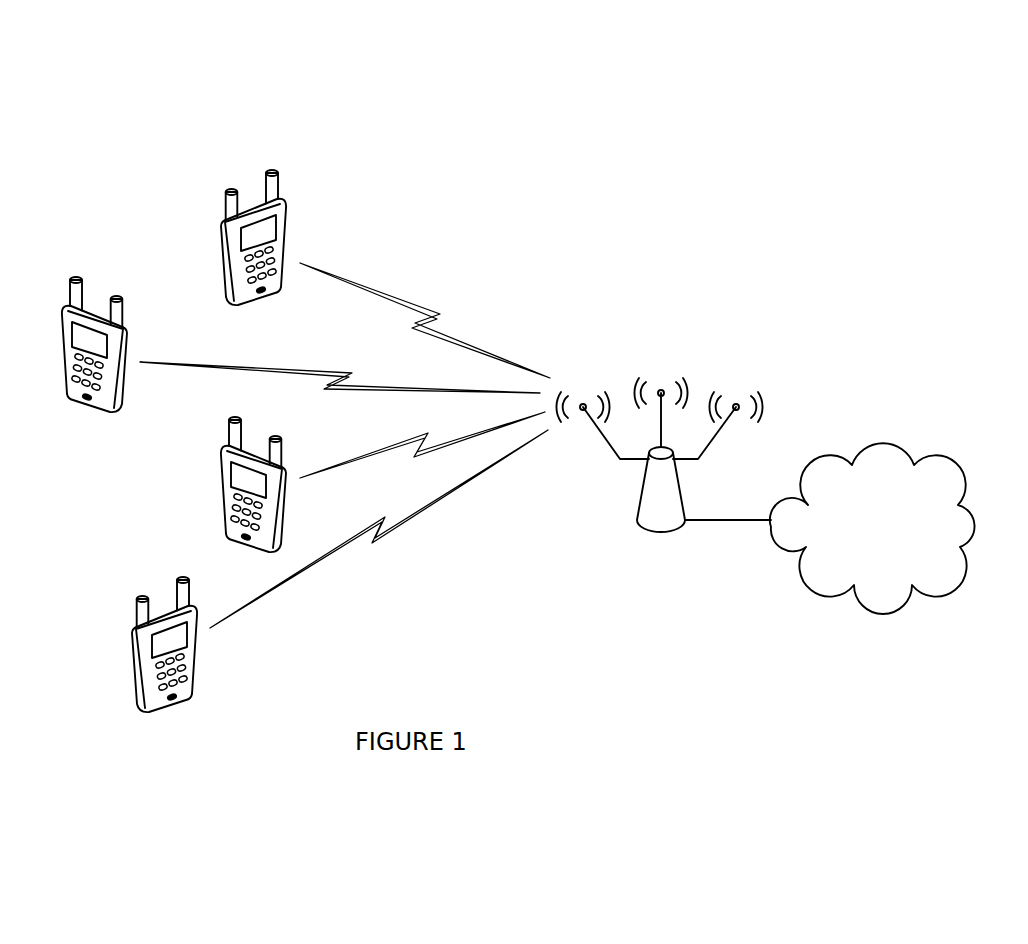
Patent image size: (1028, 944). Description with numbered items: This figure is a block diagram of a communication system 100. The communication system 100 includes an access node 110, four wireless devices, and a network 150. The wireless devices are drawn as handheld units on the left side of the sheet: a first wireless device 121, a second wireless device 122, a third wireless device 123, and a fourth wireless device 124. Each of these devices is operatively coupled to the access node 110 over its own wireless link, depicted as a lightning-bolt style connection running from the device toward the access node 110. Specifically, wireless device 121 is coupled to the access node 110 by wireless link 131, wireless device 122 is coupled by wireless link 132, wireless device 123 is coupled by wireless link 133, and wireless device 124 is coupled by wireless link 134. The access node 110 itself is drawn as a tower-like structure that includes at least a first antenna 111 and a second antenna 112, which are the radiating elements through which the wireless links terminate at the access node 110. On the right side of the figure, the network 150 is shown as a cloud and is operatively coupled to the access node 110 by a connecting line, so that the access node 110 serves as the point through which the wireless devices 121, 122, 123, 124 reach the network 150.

The communication system 100 is at (935, 77).
The access node 110 is at (663, 446).
The first antenna 111 is at (592, 372).
The second antenna 112 is at (672, 367).
The wireless device 121 is at (232, 306).
The wireless device 122 is at (257, 553).
The wireless device 123 is at (112, 410).
The wireless device 124 is at (185, 698).
The wireless link 131 is at (490, 350).
The wireless link 132 is at (470, 432).
The wireless link 133 is at (458, 387).
The wireless link 134 is at (438, 497).
The network 150 is at (872, 528).